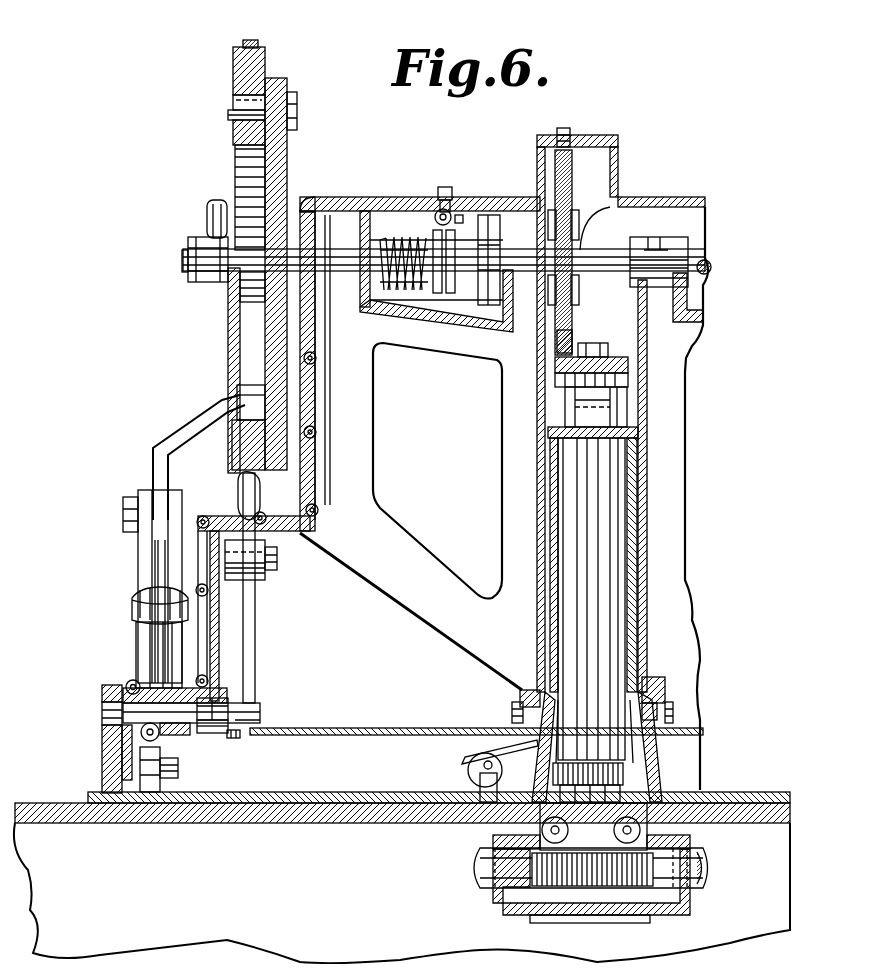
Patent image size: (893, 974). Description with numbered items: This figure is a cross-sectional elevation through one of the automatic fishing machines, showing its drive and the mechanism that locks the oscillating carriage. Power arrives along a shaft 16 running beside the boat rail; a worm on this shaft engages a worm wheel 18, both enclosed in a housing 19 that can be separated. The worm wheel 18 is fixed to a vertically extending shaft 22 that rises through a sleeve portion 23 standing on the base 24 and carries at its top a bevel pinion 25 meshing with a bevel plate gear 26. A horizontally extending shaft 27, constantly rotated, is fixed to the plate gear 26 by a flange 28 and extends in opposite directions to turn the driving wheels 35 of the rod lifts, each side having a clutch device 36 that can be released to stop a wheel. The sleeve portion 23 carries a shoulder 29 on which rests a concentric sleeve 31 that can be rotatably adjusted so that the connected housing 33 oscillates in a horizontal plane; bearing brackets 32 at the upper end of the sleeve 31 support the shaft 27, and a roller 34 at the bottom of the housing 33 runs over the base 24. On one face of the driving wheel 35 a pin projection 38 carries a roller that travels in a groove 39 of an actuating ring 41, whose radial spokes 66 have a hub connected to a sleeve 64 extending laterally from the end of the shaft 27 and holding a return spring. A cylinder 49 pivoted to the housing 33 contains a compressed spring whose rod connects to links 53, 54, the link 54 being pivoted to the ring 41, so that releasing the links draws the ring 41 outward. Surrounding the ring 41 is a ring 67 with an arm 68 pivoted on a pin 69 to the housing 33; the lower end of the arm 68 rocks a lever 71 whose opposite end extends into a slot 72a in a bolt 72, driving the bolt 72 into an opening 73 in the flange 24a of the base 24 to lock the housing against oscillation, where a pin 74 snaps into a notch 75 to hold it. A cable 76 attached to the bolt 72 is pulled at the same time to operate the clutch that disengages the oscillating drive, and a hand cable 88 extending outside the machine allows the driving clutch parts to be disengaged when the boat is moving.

The shaft 16 is at (483, 862).
The worm wheel 18 is at (540, 890).
The housing 19 is at (680, 915).
The vertically extending shaft 22 is at (597, 483).
The sleeve portion 23 is at (640, 600).
The base 24 is at (240, 800).
The extension or flange 24a is at (105, 745).
The bevel pinion 25 is at (620, 376).
The bevel plate gear 26 is at (572, 173).
The horizontally extending shaft 27 is at (596, 262).
The flange 28 is at (608, 196).
The shoulder or flange 29 is at (650, 690).
The sleeve 31 is at (645, 532).
The bearing brackets 32 is at (500, 222).
The housing 33 is at (295, 540).
The roller 34 is at (147, 755).
The driving wheel 35 is at (286, 175).
The clutch device 36 is at (470, 230).
The pin projection 38 is at (232, 100).
The groove 39 is at (240, 412).
The actuating ring 41 is at (265, 72).
The cylinder 49 is at (148, 638).
The link 53 is at (135, 516).
The link 54 is at (195, 418).
The sleeve 64 is at (214, 222).
The spokes or guides 66 is at (232, 318).
The ring 67 is at (250, 42).
The arm 68 is at (256, 635).
The pin 69 is at (276, 566).
The lever 71 is at (258, 716).
The bolt 72 is at (145, 690).
The slot 72a is at (230, 706).
The opening 73 is at (105, 720).
The pin 74 is at (160, 738).
The notch 75 is at (226, 738).
The cable 76 is at (372, 732).
The hand cable 88 is at (468, 773).